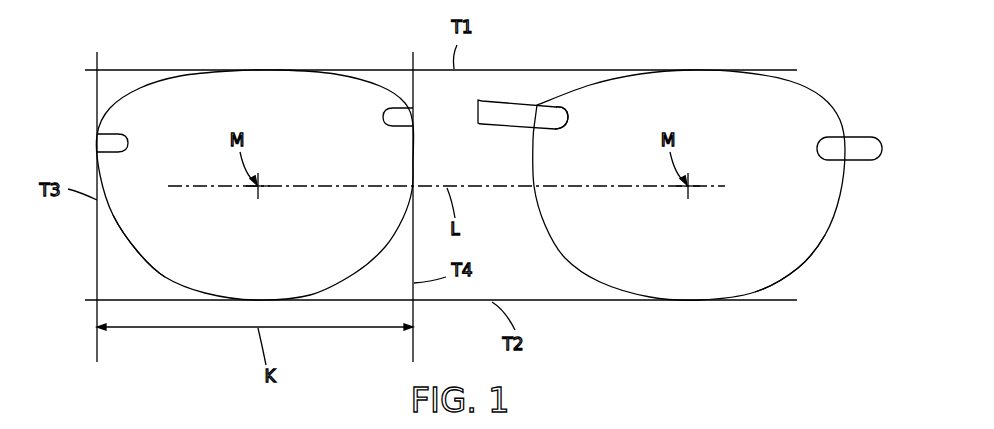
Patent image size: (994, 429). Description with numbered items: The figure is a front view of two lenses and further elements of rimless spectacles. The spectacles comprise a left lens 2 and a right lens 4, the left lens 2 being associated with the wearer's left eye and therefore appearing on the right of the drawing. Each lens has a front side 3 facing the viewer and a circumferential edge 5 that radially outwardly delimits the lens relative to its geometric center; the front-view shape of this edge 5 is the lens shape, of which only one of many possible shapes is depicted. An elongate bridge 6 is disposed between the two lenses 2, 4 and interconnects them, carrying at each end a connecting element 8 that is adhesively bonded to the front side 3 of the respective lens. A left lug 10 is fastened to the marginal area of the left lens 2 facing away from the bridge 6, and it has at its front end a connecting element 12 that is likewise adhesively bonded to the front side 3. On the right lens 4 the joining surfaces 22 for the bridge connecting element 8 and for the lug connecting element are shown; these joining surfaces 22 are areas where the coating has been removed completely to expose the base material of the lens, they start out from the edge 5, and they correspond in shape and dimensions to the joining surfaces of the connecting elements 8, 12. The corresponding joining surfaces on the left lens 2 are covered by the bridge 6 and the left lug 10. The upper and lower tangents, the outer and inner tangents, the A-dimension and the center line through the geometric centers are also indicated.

The left lens 2 is at (813, 89).
The front side 3 is at (470, 167).
The right lens 4 is at (140, 85).
The circumferential edge 5 is at (138, 262).
The bridge 6 is at (488, 127).
The connecting element 8 is at (558, 118).
The left lug 10 is at (832, 178).
The connecting element 12 is at (823, 148).
The joining surface 22 is at (122, 143).